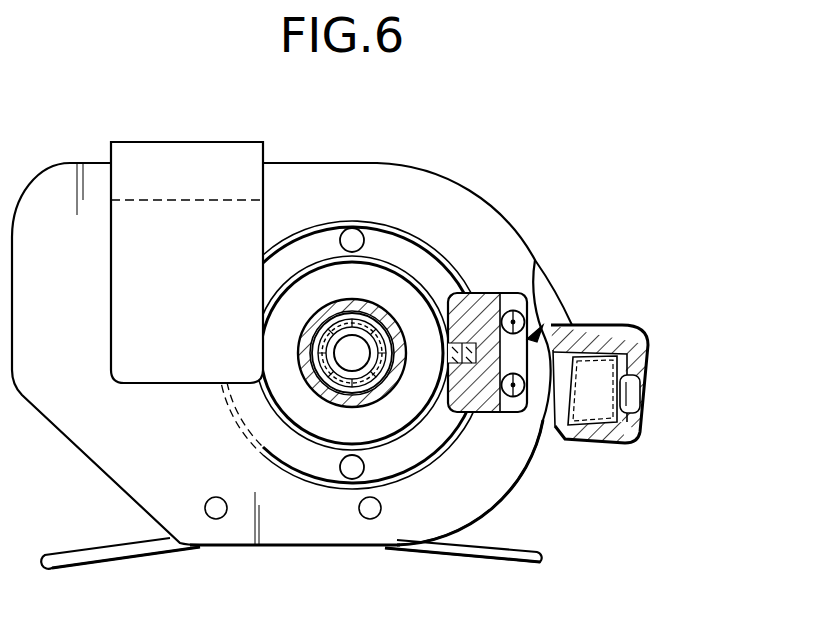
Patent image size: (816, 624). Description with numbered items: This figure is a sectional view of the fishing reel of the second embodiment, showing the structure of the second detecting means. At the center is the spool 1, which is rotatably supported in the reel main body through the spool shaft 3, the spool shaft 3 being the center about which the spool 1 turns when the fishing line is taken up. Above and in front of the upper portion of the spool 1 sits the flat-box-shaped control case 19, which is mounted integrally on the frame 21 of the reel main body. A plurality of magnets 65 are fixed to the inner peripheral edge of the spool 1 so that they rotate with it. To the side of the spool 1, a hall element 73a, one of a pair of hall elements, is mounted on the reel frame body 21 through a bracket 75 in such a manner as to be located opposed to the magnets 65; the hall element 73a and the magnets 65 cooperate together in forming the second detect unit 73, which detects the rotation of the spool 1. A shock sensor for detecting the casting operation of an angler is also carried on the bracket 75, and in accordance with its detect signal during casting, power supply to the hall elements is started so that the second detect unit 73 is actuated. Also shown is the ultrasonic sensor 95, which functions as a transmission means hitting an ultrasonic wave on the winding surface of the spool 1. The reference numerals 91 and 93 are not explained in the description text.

The spool 1 is at (296, 256).
The spool shaft 3 is at (373, 336).
The control case 19 is at (185, 158).
The frame 21 is at (490, 489).
The magnets 65 is at (352, 236).
The second detect unit 73 is at (558, 330).
The hall element 73a is at (469, 300).
The bracket 75 is at (538, 331).
The connector housing 91 is at (628, 333).
The connector 93 is at (640, 440).
The ultrasonic sensor 95 is at (610, 398).